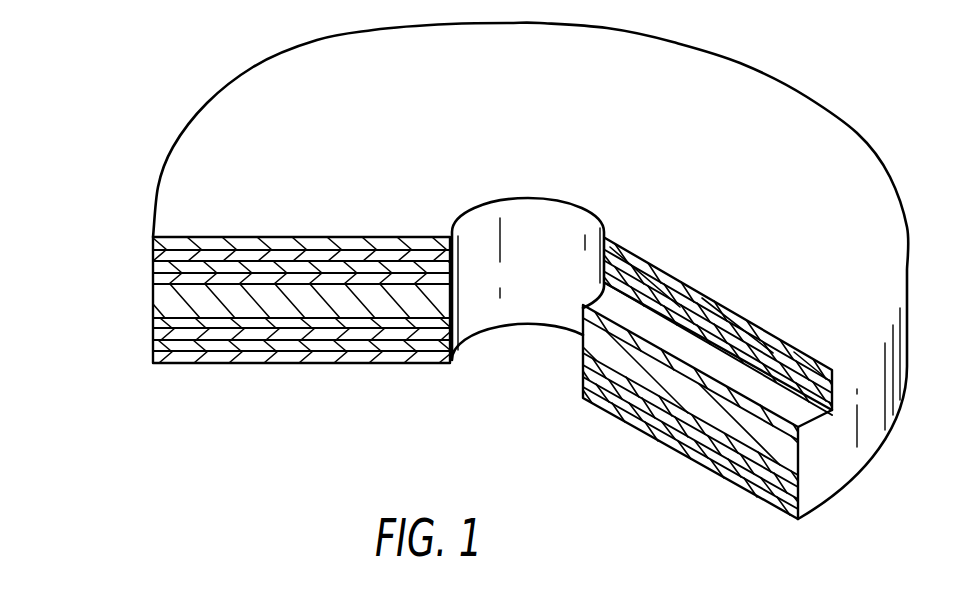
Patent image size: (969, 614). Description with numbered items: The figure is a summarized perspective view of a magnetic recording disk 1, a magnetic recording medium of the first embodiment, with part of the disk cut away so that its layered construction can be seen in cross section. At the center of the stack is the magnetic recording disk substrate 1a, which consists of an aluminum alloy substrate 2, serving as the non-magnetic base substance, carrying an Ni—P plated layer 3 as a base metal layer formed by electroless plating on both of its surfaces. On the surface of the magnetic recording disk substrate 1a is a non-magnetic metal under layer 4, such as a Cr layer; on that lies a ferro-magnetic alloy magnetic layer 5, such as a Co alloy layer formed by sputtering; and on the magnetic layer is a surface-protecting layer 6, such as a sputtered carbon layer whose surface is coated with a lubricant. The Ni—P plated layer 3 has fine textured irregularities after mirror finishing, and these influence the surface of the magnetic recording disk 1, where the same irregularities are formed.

The magnetic recording disk 1 is at (226, 68).
The magnetic recording disk substrate 1a is at (120, 393).
The aluminum alloy substrate 2 is at (155, 310).
The Ni—P plated layer 3 is at (157, 277).
The non-magnetic metal under layer 4 is at (157, 265).
The ferro-magnetic alloy magnetic layer 5 is at (153, 255).
The surface-protecting layer 6 is at (157, 247).